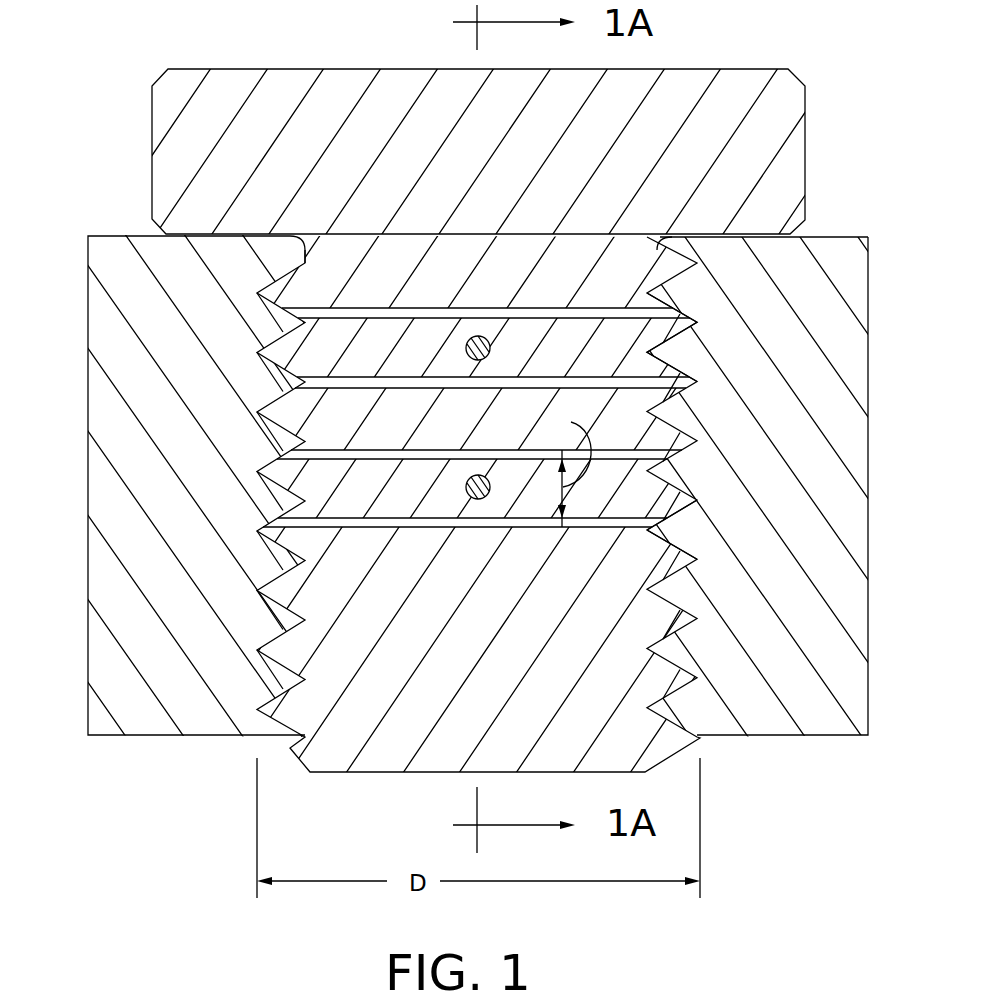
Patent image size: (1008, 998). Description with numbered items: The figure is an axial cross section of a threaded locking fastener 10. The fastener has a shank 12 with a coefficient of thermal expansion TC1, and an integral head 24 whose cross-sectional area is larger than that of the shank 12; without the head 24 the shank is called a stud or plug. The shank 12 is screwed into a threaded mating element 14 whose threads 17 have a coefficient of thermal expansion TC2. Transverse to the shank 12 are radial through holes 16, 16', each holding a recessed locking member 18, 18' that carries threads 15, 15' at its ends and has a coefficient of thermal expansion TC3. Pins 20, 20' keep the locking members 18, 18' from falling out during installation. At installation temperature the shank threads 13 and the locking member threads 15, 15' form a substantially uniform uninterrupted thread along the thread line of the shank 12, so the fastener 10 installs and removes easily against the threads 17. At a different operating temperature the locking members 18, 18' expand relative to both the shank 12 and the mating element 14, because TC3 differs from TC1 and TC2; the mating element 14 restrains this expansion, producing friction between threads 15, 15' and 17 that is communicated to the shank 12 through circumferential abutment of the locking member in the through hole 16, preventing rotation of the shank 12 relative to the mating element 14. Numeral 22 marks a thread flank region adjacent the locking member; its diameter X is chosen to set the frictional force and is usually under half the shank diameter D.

The threaded locking fastener 10 is at (147, 70).
The shank 12 is at (495, 709).
The shank threads 13 is at (684, 526).
The threaded mating element 14 is at (190, 519).
The locking member threads 15 is at (472, 496).
The locking member threads 15' is at (708, 337).
The radial through hole 16 is at (479, 427).
The radial through hole 16' is at (486, 285).
The threads 17 is at (293, 289).
The recessed locking member 18 is at (504, 499).
The recessed locking member 18' is at (481, 499).
The pin 20 is at (468, 521).
The pin 20' is at (498, 306).
The loaded thread flank 22 is at (676, 553).
The integral head 24 is at (806, 104).